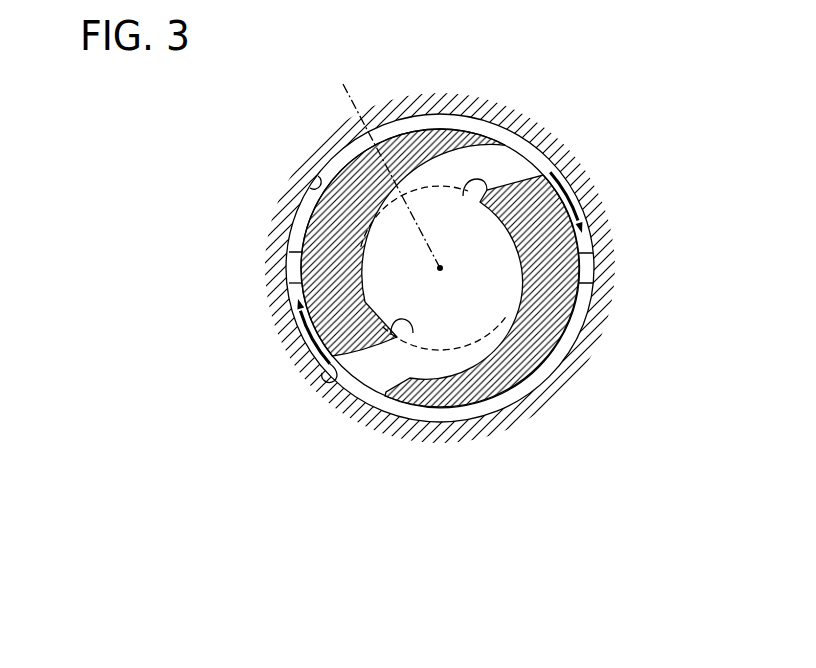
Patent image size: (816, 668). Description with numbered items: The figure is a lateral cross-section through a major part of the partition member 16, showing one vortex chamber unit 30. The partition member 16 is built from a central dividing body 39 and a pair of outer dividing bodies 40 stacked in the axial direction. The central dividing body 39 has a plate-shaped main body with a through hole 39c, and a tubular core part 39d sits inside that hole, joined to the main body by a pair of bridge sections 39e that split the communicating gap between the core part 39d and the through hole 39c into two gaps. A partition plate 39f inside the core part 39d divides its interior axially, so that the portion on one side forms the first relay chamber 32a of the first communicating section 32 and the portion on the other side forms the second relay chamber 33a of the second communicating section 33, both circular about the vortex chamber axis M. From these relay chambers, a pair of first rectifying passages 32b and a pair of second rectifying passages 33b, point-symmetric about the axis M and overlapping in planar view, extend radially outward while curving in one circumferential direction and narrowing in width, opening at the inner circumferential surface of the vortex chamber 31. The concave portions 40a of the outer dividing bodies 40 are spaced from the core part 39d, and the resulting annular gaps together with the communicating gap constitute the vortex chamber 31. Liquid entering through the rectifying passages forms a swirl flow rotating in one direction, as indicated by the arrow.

The partition member 16 is at (677, 90).
The vortex chamber unit 30 is at (443, 356).
The vortex chamber 31 is at (503, 410).
The first communicating section 32 is at (419, 355).
The second communicating section 33 is at (419, 355).
The first relay chamber 32a is at (403, 328).
The first rectifying passage 32b is at (420, 351).
The second relay chamber 33a is at (413, 333).
The second rectifying passage 33b is at (380, 383).
The central dividing body 39 is at (443, 333).
The through hole 39c is at (317, 179).
The core part 39d is at (300, 285).
The bridge section 39e is at (288, 267).
The partition plate 39f is at (396, 250).
The outer dividing body 40 is at (588, 192).
The concave portion 40a is at (323, 376).
The vortex chamber axis M is at (388, 166).